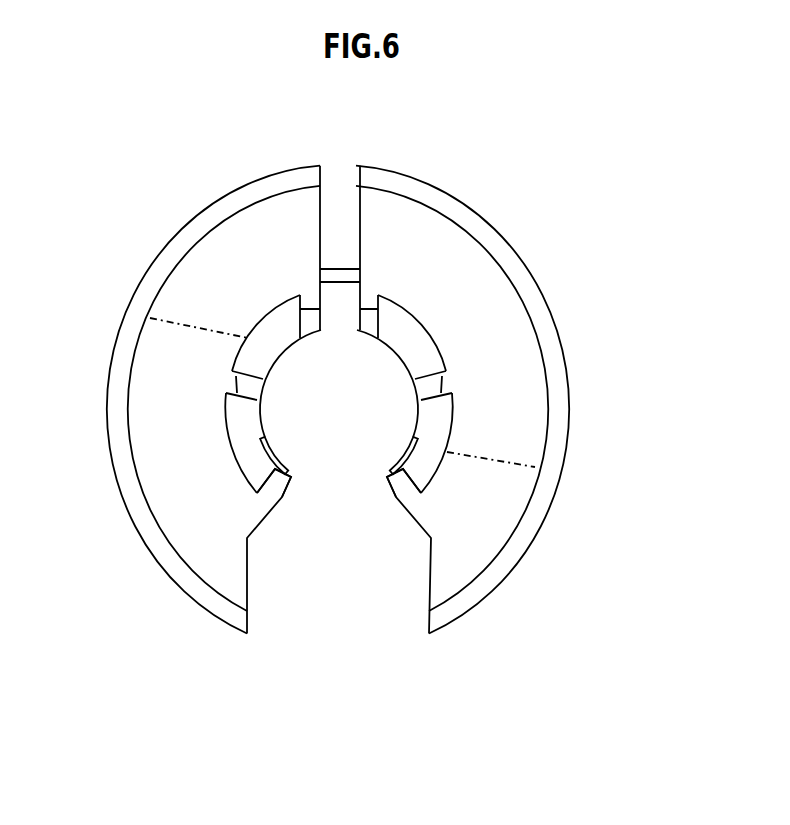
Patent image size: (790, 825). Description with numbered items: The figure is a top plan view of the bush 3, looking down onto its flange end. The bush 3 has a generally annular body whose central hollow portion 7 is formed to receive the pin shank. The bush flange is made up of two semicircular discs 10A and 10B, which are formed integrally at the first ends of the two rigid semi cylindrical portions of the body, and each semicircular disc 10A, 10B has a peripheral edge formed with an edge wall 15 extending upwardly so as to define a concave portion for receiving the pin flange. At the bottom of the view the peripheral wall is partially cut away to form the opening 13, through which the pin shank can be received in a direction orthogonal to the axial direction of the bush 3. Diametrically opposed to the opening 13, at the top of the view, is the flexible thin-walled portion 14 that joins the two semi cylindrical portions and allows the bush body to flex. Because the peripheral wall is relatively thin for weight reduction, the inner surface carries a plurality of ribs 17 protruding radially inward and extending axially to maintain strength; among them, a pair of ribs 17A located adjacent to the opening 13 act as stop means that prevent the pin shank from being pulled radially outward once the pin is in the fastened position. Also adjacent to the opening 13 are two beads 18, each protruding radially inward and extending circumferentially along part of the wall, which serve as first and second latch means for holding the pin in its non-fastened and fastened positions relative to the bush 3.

The bush 3 is at (540, 208).
The hollow portion 7 is at (323, 400).
The semicircular disc 10A is at (180, 497).
The semicircular disc 10B is at (472, 523).
The opening 13 is at (302, 603).
The thin-walled portion 14 is at (343, 276).
The edge wall 15 is at (132, 362).
The ribs 17 is at (248, 387).
The ribs 17A is at (283, 493).
The bead 18 is at (268, 450).